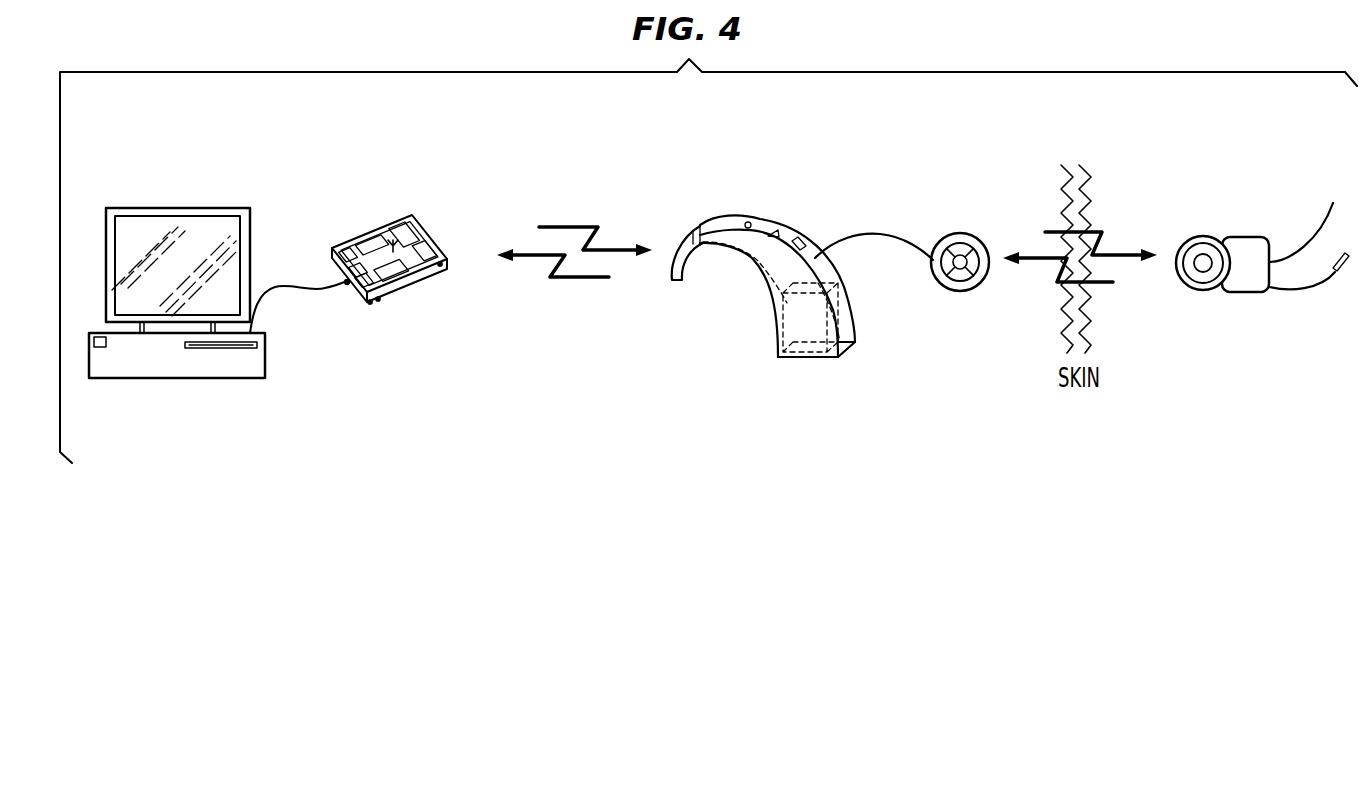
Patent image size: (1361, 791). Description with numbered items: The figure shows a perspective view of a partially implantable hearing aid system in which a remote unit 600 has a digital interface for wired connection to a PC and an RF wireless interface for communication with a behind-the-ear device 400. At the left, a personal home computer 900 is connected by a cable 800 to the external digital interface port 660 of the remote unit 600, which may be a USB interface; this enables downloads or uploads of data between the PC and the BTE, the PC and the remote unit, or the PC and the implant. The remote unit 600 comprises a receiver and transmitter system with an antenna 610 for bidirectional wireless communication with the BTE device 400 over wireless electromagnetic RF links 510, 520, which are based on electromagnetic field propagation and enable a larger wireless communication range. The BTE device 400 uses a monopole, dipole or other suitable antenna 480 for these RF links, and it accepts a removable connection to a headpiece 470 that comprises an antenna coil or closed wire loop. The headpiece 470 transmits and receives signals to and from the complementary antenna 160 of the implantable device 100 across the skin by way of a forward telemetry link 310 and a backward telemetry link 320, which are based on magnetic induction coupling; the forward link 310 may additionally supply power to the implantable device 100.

The implantable device 100 is at (1265, 281).
The complementary antenna 160 is at (1197, 237).
The forward telemetry link 310 is at (1113, 252).
The backward telemetry link 320 is at (1037, 260).
The behind-the-ear device 400 is at (773, 307).
The headpiece 470 is at (957, 233).
The antenna 480 is at (697, 233).
The wireless electromagnetic RF link 510 is at (582, 278).
The wireless electromagnetic RF link 520 is at (572, 227).
The remote unit 600 is at (383, 319).
The antenna 610 is at (420, 238).
The external digital interface port 660 is at (345, 286).
The cable 800 is at (277, 285).
The personal home computer 900 is at (195, 400).